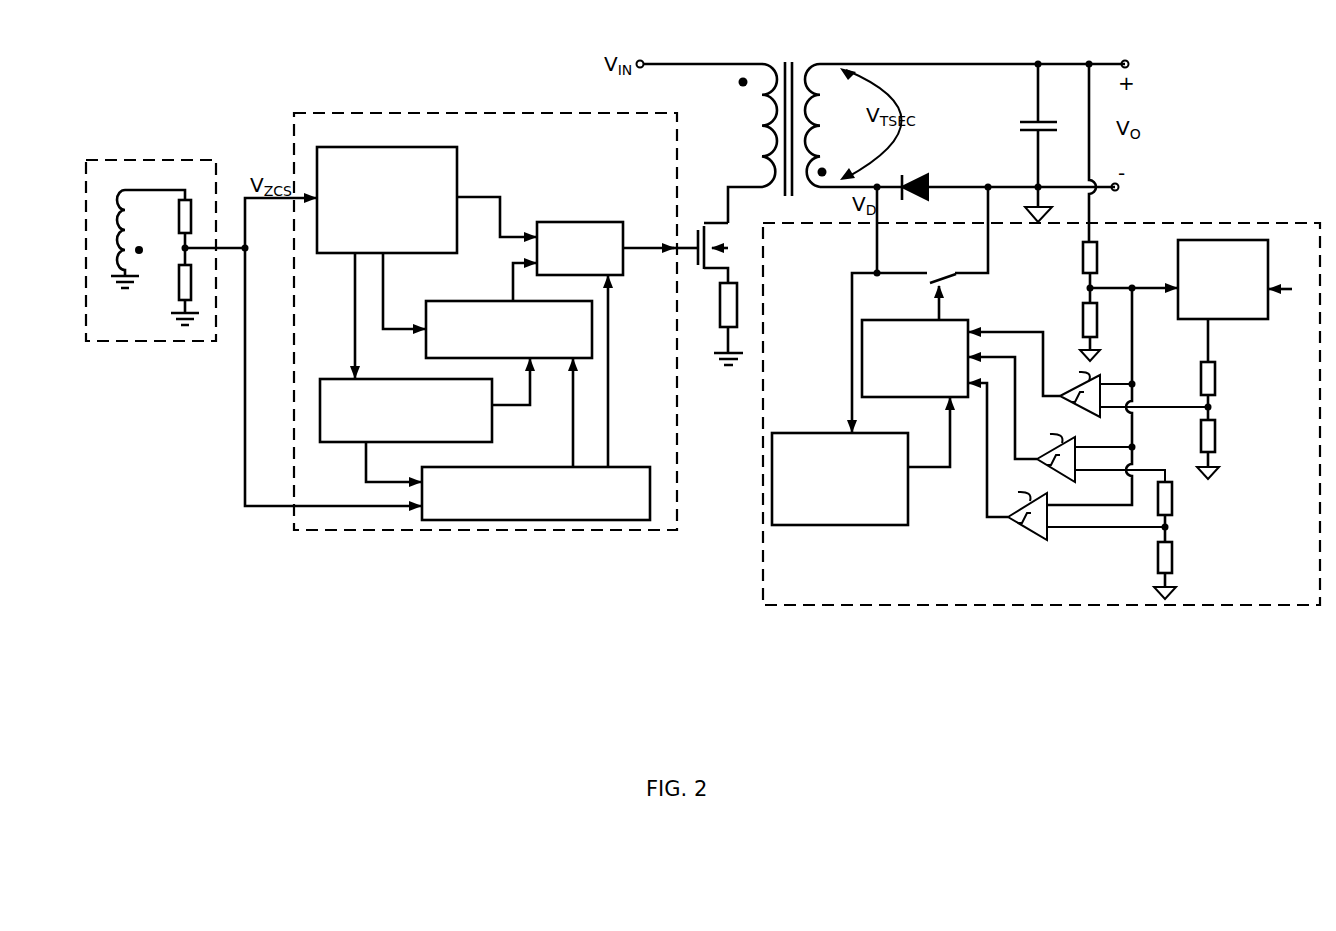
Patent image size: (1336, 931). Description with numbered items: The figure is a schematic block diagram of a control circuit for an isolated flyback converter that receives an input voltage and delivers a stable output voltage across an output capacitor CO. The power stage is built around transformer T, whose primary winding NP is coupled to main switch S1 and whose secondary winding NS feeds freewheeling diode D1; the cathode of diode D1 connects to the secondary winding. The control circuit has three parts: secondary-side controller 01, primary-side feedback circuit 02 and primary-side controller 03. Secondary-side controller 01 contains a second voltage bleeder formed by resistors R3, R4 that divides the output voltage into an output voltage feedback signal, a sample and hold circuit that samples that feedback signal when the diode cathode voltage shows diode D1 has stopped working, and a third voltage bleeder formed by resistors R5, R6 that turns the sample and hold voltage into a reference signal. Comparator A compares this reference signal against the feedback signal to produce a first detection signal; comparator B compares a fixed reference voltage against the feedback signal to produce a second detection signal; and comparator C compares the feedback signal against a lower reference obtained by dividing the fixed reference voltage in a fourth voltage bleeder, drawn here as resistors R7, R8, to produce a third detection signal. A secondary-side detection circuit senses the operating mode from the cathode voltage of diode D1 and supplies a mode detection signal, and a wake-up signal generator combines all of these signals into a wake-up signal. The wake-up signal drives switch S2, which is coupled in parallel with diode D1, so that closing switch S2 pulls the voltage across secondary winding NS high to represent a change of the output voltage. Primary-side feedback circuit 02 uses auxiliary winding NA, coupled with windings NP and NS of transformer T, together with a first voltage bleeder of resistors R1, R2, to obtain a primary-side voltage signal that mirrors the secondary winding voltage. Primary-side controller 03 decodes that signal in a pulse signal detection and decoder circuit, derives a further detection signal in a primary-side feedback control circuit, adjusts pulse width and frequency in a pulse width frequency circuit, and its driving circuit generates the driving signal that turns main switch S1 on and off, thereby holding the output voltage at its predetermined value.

The secondary-side controller 01 is at (823, 587).
The primary-side feedback circuit 02 is at (124, 331).
The primary-side controller 03 is at (631, 149).
The primary-side auxiliary winding NA is at (140, 239).
The resistor R1 is at (172, 232).
The resistor R2 is at (176, 295).
The resistor R3 is at (1077, 272).
The resistor R4 is at (1078, 332).
The resistor R5 is at (1222, 391).
The resistor R6 is at (1220, 449).
The seventh resistor R7 is at (1179, 512).
The eighth resistor R8 is at (1177, 570).
The transformer T is at (789, 117).
The primary winding NP is at (749, 125).
The secondary winding NS is at (831, 125).
The main switch S1 is at (730, 294).
The switch S2 is at (957, 235).
The diode D1 is at (922, 173).
The output capacitor CO is at (1053, 125).
The comparator A is at (1134, 386).
The comparator B is at (1100, 450).
The comparator C is at (1084, 508).